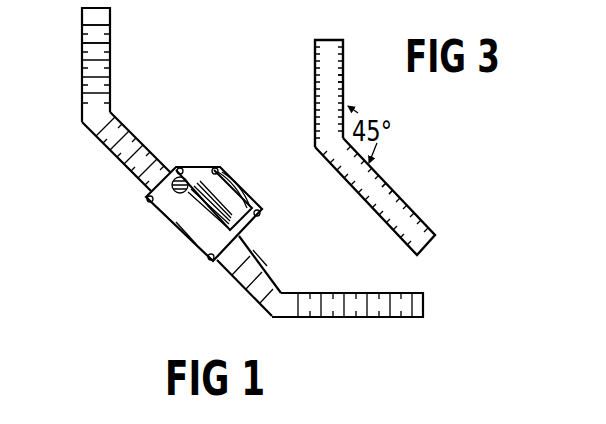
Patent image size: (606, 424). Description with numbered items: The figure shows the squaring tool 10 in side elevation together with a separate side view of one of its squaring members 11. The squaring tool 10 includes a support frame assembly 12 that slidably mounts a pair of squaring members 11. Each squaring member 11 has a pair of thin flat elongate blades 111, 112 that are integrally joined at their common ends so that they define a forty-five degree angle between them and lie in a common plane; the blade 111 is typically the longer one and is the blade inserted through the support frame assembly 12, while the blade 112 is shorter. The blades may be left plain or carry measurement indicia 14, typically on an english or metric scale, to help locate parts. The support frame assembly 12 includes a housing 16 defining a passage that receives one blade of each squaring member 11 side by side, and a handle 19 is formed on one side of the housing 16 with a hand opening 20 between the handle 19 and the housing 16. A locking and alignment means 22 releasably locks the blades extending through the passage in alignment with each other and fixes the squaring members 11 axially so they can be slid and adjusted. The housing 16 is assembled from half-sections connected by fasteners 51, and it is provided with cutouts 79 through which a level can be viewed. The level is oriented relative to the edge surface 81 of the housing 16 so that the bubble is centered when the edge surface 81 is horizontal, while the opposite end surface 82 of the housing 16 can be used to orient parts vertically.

In FIG. 1, the squaring tool 10 is at (170, 230).
In FIG. 1, the squaring member 11 is at (235, 183).
In FIG. 3, the squaring member 11 is at (350, 147).
In FIG. 1, the blade 111 is at (130, 134).
In FIG. 3, the blade 111 is at (375, 196).
In FIG. 1, the blade 112 is at (112, 50).
In FIG. 3, the blade 112 is at (314, 82).
In FIG. 1, the support frame assembly 12 is at (218, 166).
In FIG. 1, the measurement indicia 14 is at (112, 113).
In FIG. 3, the measurement indicia 14 is at (344, 90).
In FIG. 1, the housing 16 is at (195, 242).
In FIG. 1, the handle 19 is at (261, 215).
In FIG. 1, the hand opening 20 is at (236, 210).
In FIG. 1, the locking and alignment means 22 is at (181, 167).
In FIG. 1, the fasteners 51 is at (146, 201).
In FIG. 1, the cutouts 79 is at (246, 186).
In FIG. 1, the edge surface 81 is at (177, 249).
In FIG. 1, the end surface 82 is at (143, 181).